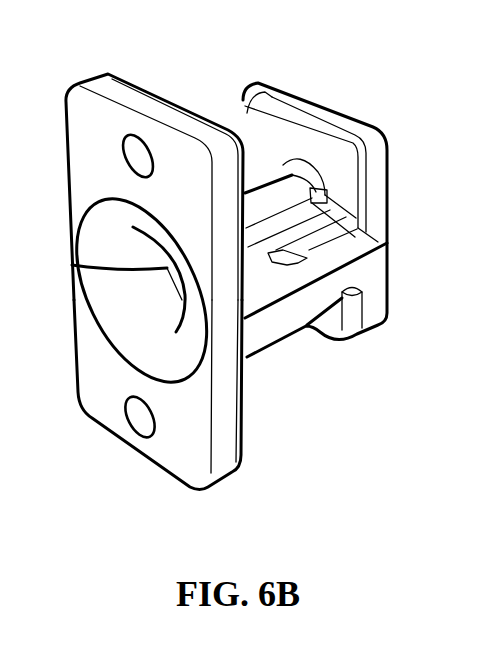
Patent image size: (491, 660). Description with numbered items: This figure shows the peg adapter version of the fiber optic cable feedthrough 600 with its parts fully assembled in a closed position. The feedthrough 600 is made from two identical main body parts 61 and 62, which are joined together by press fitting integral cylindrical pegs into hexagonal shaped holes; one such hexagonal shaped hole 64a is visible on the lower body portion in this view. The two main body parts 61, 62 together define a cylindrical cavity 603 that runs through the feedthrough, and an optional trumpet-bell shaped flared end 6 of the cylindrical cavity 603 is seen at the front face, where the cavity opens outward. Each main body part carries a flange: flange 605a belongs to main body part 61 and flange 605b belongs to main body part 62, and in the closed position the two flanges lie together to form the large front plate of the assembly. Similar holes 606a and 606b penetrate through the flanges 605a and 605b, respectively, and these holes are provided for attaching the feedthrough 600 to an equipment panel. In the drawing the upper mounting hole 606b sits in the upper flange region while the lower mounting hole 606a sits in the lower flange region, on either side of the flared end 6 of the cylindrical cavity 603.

The fiber optic cable feedthrough 600 is at (53, 42).
The trumpet-bell shaped flared end 6 is at (119, 328).
The main body part 61 is at (258, 343).
The main body part 62 is at (255, 182).
The hexagonal shaped hole 64a is at (290, 266).
The cylindrical cavity 603 is at (152, 293).
The flange 605a is at (240, 442).
The flange 605b is at (147, 84).
The hole 606a is at (135, 423).
The hole 606b is at (141, 142).